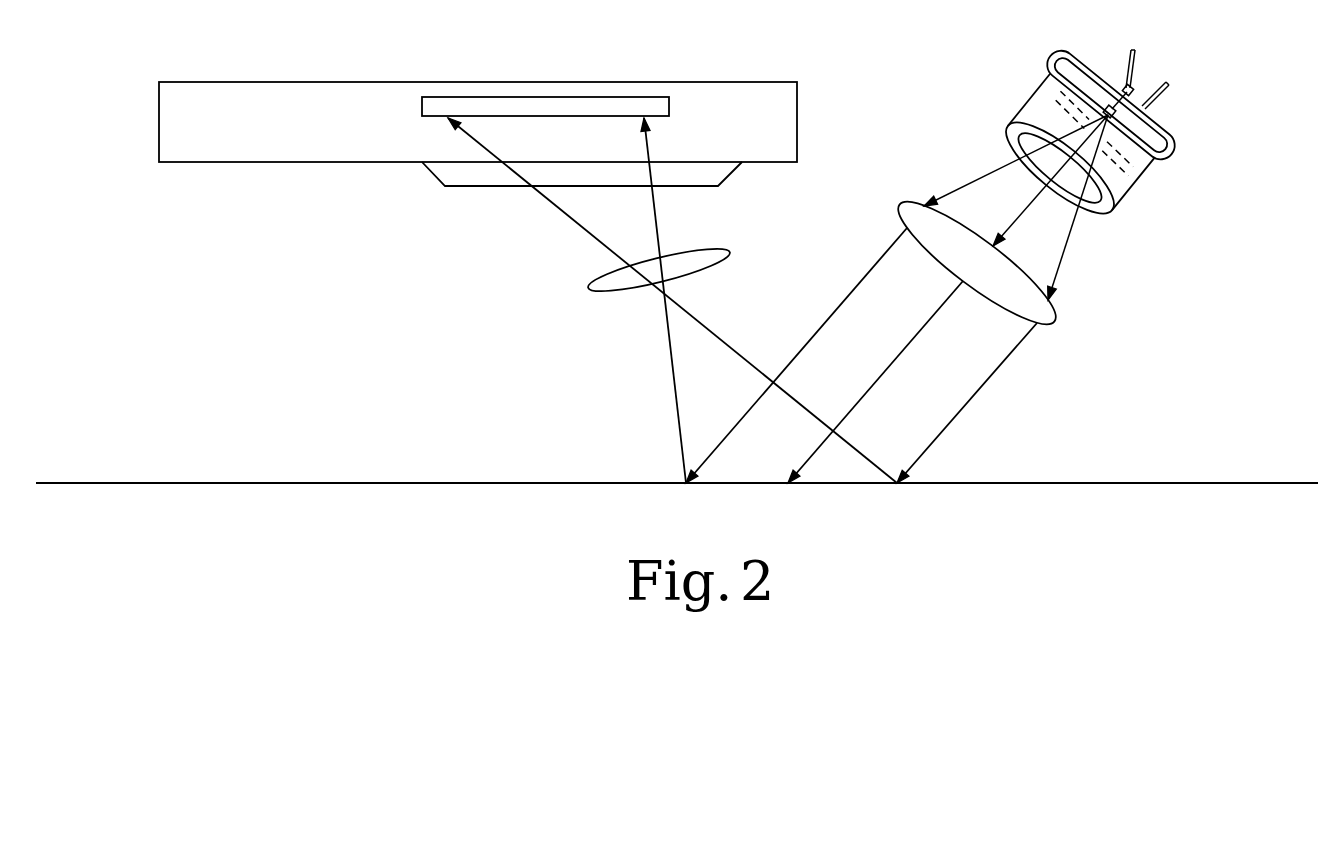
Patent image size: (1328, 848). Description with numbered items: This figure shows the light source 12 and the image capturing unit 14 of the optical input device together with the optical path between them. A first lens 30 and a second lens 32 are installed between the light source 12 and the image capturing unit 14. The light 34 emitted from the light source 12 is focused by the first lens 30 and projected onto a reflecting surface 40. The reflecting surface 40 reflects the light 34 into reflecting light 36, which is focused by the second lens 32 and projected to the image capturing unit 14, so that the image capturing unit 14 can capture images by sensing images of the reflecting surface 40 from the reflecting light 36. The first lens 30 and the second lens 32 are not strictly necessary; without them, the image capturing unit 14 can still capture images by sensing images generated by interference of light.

The light source 12 is at (1143, 107).
The image capturing unit 14 is at (633, 97).
The first lens 30 is at (912, 204).
The second lens 32 is at (729, 252).
The light 34 is at (979, 391).
The reflecting light 36 is at (675, 390).
The reflecting surface 40 is at (1246, 483).